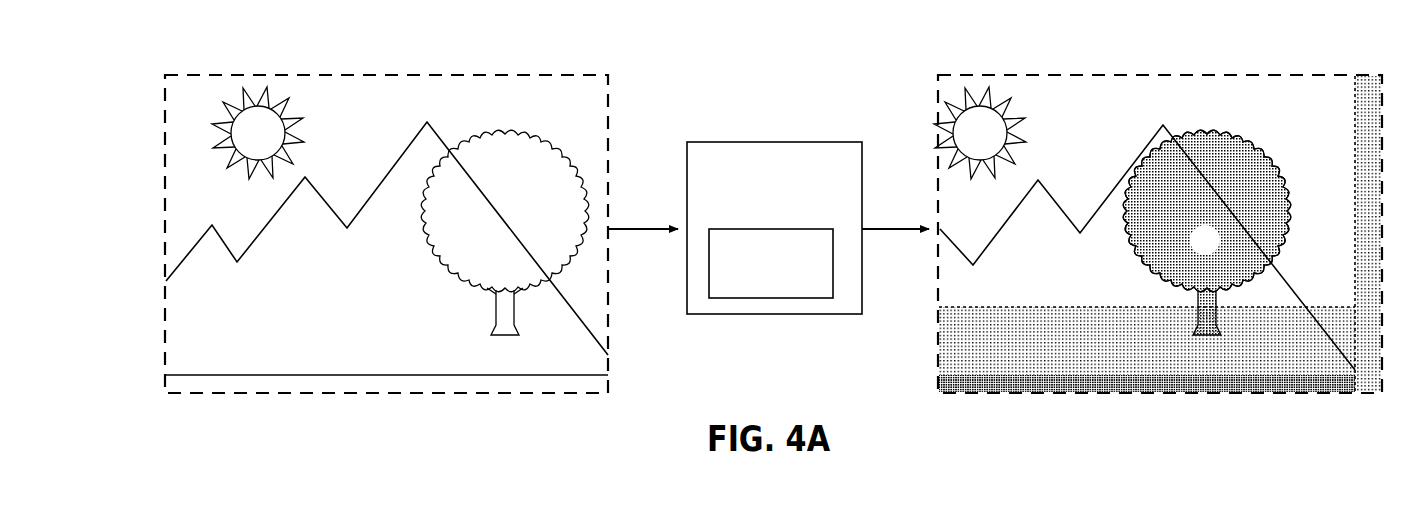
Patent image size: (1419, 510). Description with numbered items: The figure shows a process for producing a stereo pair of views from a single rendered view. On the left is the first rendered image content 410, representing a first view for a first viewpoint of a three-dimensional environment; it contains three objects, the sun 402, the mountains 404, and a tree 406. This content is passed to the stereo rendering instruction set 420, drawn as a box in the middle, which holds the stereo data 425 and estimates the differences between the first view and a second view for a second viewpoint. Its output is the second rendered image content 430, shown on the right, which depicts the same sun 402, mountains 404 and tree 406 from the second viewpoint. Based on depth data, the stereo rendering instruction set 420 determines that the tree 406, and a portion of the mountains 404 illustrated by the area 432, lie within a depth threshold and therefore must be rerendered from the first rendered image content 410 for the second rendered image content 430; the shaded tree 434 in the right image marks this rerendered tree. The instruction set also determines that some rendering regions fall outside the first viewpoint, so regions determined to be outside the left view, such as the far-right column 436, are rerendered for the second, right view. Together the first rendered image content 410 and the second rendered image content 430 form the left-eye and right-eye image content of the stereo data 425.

The first rendered image content 410 is at (163, 75).
The sun 402 is at (300, 114).
The mountains 404 is at (427, 122).
The tree 406 is at (532, 137).
The stereo rendering instruction set 420 is at (768, 228).
The stereo data 425 is at (771, 263).
The second rendered image content 430 is at (936, 75).
The area 432 is at (1008, 322).
The tree shading 434 is at (1145, 266).
The far-right column 436 is at (1362, 184).